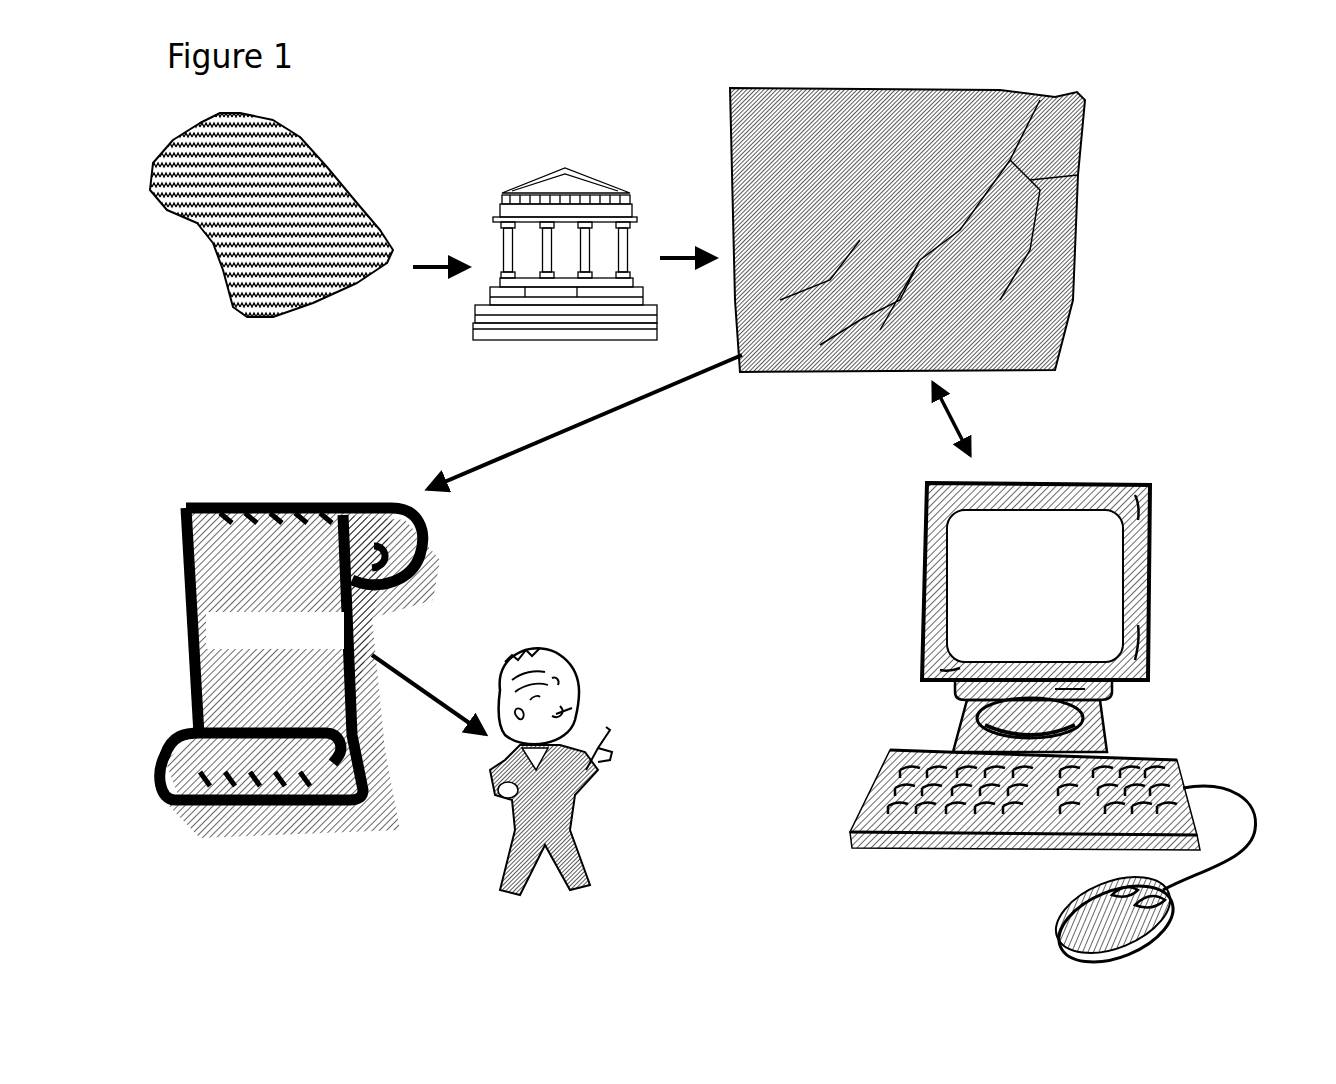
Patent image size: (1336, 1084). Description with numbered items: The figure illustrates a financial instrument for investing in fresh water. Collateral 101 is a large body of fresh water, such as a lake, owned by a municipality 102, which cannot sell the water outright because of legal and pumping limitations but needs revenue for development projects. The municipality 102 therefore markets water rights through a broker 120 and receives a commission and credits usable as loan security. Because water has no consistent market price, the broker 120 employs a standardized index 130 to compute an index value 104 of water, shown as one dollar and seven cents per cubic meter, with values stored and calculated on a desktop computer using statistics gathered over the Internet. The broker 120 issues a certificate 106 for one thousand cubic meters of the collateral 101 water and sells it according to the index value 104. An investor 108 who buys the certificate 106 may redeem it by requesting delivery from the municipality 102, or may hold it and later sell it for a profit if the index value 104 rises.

The collateral 101 is at (292, 127).
The municipality 102 is at (565, 343).
The broker 120 is at (1073, 285).
The certificate 106 is at (297, 490).
The investor 108 is at (513, 837).
The index value 104 is at (1013, 568).
The standardized index 130 is at (891, 750).